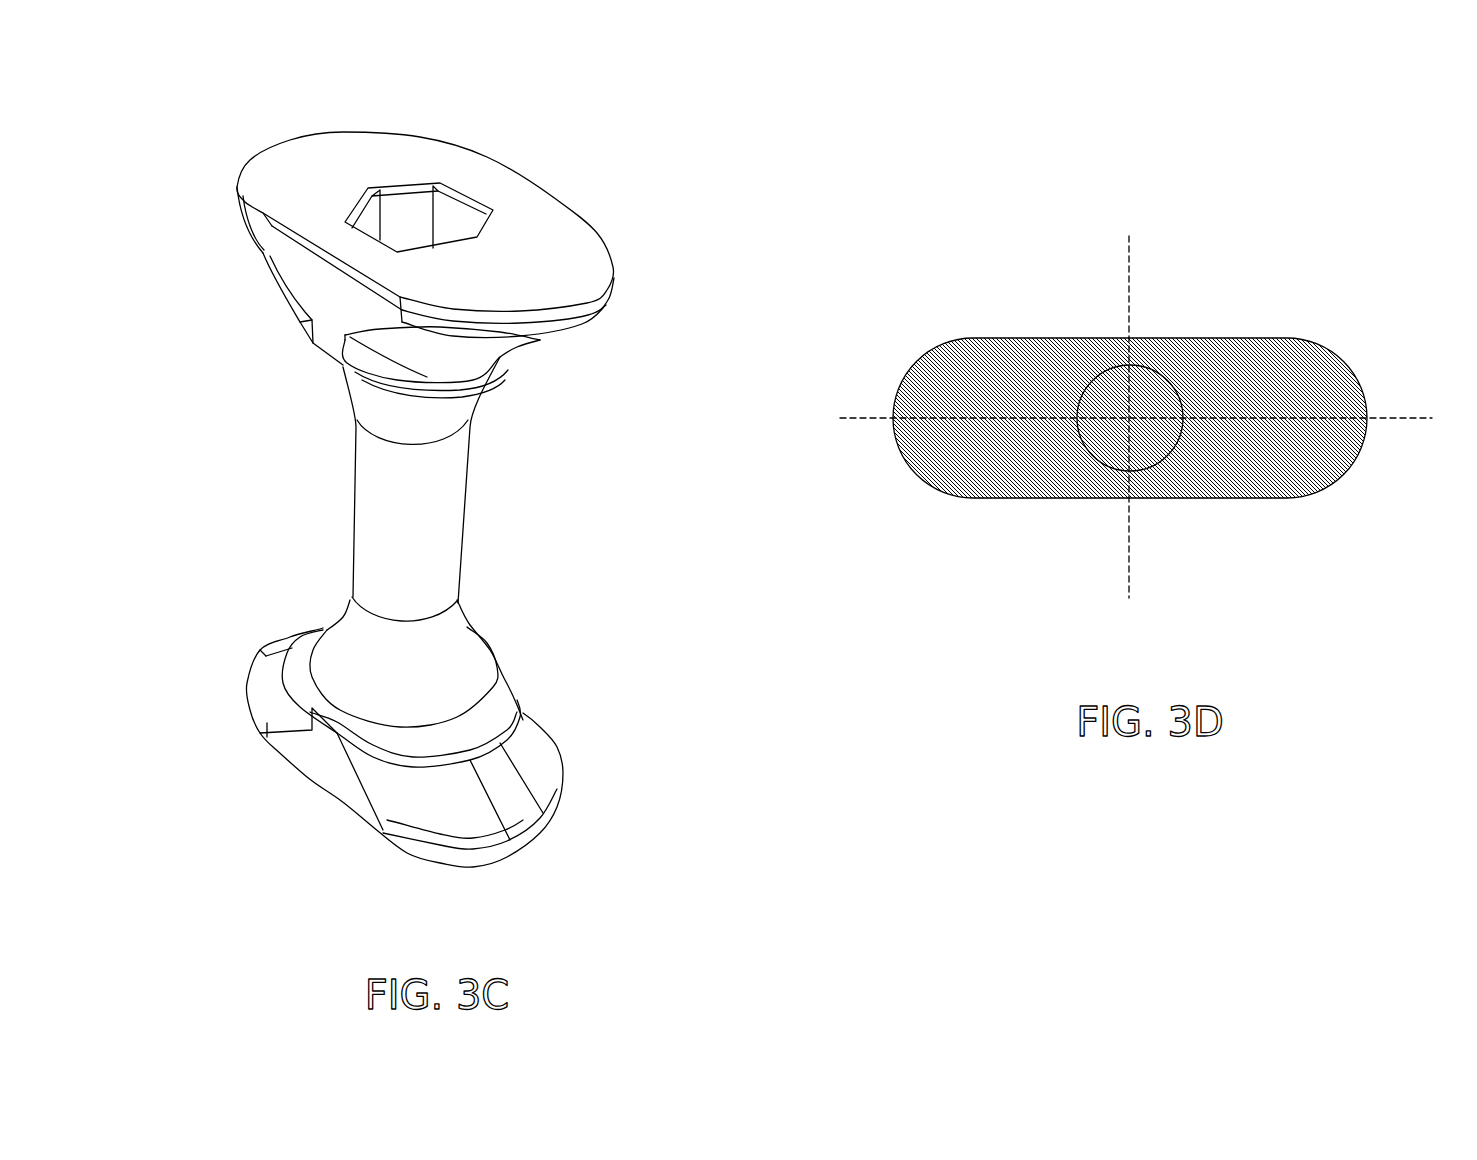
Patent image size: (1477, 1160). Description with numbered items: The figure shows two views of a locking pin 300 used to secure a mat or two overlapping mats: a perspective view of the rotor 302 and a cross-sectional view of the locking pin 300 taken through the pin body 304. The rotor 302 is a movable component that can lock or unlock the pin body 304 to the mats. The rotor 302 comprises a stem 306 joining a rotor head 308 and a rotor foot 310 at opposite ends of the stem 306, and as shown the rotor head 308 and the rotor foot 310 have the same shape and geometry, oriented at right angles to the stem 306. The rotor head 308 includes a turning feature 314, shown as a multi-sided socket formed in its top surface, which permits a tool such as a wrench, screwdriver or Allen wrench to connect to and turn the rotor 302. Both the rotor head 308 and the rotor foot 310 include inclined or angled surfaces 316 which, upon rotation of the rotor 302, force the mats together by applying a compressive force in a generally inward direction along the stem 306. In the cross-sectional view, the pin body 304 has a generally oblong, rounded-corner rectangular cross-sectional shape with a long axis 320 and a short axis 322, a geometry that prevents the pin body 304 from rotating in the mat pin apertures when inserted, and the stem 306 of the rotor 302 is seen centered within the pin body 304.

In FIG. 3D, the locking pin 300 is at (1362, 268).
In FIG. 3C, the rotor 302 is at (208, 146).
In FIG. 3D, the rotor 302 is at (1192, 346).
In FIG. 3D, the pin body 304 is at (930, 472).
In FIG. 3C, the stem 306 is at (445, 522).
In FIG. 3D, the stem 306 is at (1163, 384).
In FIG. 3C, the rotor head 308 is at (590, 330).
In FIG. 3C, the rotor foot 310 is at (325, 758).
In FIG. 3C, the turning feature 314 is at (420, 217).
In FIG. 3C, the inclined/angled surfaces 316 is at (270, 271).
In FIG. 3D, the long axis 320 is at (1386, 423).
In FIG. 3D, the short axis 322 is at (1129, 573).